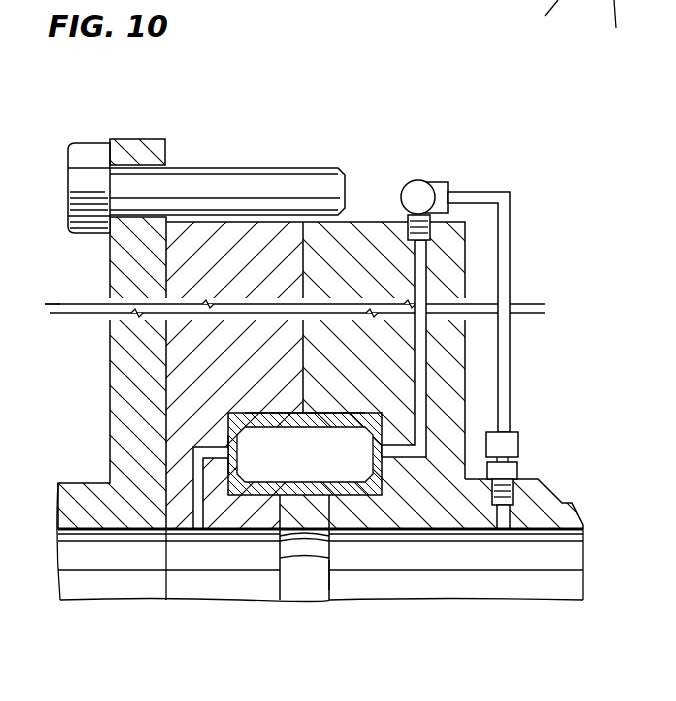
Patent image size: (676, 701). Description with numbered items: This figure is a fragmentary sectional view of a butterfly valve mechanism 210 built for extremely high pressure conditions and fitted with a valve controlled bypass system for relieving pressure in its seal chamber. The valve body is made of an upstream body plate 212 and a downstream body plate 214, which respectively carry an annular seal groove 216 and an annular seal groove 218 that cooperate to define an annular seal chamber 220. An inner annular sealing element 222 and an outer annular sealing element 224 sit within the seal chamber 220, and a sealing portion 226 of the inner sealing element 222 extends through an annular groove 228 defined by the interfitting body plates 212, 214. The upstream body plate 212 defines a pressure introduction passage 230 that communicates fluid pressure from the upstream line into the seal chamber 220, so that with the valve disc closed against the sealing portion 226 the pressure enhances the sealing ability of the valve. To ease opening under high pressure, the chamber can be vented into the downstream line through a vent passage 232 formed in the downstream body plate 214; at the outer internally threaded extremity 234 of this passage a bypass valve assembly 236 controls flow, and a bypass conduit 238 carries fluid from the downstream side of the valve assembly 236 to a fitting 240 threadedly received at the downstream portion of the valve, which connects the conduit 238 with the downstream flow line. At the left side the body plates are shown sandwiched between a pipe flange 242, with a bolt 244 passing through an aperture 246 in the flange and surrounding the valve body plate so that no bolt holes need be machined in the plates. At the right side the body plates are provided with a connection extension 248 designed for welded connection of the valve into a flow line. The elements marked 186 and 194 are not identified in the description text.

The support member 186 is at (537, 19).
The support member 194 is at (622, 25).
The butterfly valve mechanism 210 is at (530, 262).
The upstream body plate 212 is at (187, 588).
The downstream body plate 214 is at (455, 590).
The annular seal groove 216 is at (250, 413).
The annular seal groove 218 is at (348, 413).
The annular seal chamber 220 is at (321, 469).
The inner annular sealing element 222 is at (250, 488).
The outer annular sealing element 224 is at (323, 423).
The sealing portion 226 is at (308, 523).
The annular groove 228 is at (327, 578).
The pressure introduction passage 230 is at (190, 472).
The vent passage 232 is at (420, 350).
The internally threaded extremity 234 is at (410, 233).
The bypass valve assembly 236 is at (415, 180).
The bypass conduit 238 is at (512, 202).
The fitting 240 is at (516, 442).
The pipe flange 242 is at (110, 266).
The bolt 244 is at (225, 178).
The aperture 246 is at (132, 163).
The connection extension 248 is at (548, 513).